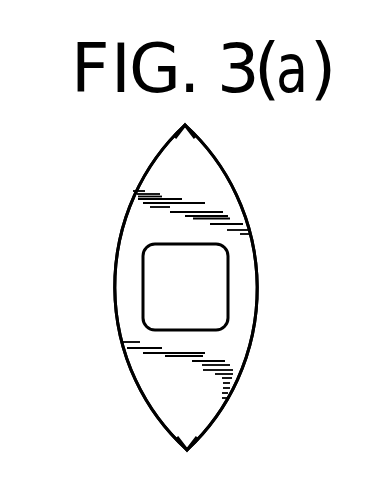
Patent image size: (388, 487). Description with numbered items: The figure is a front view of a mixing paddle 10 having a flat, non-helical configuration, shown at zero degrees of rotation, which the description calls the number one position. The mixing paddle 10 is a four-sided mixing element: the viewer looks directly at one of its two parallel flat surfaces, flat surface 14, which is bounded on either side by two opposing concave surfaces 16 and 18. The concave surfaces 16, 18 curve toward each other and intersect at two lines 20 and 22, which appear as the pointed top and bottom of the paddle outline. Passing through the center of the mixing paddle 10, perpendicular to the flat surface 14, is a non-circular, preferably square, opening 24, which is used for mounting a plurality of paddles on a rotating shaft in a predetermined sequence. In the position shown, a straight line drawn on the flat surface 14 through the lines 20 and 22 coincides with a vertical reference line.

The mixing paddle 10 is at (248, 384).
The flat surface 14 is at (223, 201).
The concave surface 16 is at (117, 288).
The concave surface 18 is at (257, 265).
The line 20 is at (185, 125).
The line 22 is at (187, 450).
The opening 24 is at (217, 308).